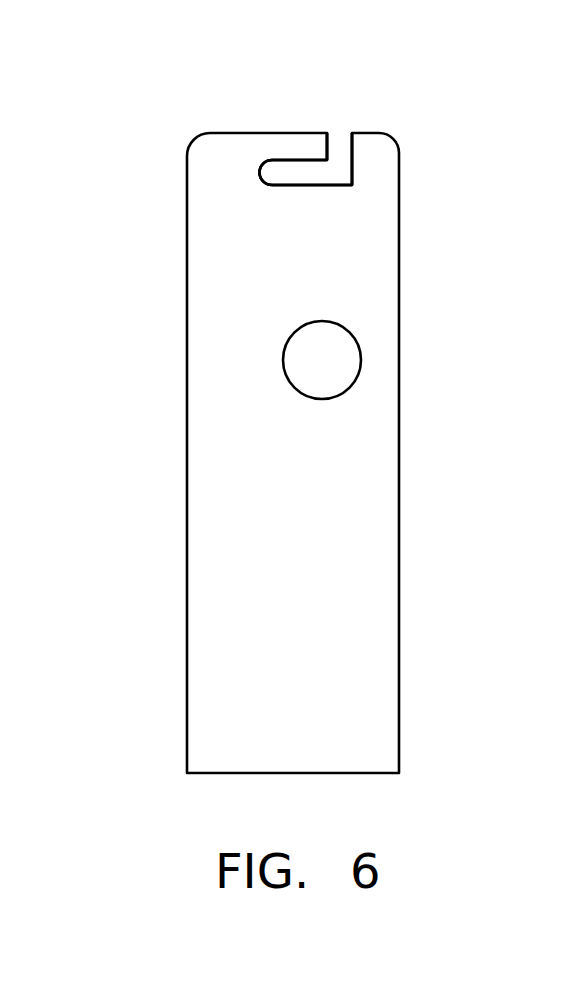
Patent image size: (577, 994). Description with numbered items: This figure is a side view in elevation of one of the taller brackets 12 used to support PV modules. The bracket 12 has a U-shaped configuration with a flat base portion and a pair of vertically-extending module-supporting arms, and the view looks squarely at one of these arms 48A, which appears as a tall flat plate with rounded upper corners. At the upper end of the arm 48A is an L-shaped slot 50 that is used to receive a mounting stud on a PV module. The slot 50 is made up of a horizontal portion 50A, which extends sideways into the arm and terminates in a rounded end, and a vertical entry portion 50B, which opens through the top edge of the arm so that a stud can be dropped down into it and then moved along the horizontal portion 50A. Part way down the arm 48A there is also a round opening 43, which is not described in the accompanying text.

The taller bracket 12 is at (160, 220).
The hole 43 is at (335, 363).
The vertically-extending arm 48A is at (317, 600).
The L-shaped slot 50 is at (360, 110).
The horizontal portion 50A is at (300, 170).
The vertical entry portion 50B is at (333, 138).